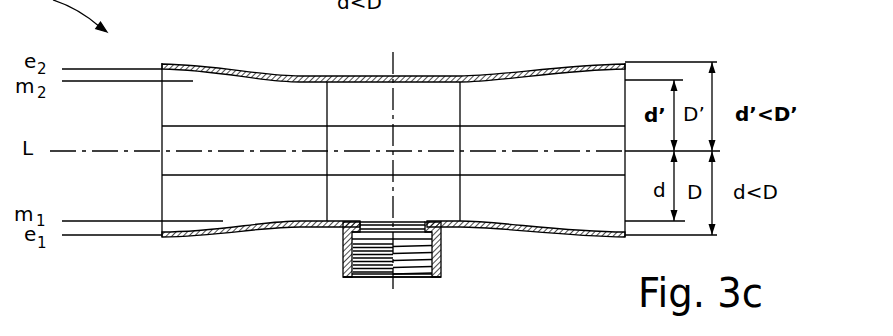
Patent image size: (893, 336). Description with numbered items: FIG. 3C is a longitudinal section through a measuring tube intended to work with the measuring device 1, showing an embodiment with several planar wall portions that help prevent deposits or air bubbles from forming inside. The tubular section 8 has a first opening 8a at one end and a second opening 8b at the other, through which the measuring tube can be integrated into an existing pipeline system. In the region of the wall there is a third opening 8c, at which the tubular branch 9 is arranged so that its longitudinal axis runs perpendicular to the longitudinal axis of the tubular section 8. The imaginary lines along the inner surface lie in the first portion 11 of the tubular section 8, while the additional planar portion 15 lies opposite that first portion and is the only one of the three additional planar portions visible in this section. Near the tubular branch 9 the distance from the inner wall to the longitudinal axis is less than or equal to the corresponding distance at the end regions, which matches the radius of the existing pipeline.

The measuring device 1 is at (366, 283).
The tubular section 8 is at (238, 52).
The first opening 8a is at (164, 135).
The second opening 8b is at (624, 135).
The third opening 8c is at (407, 212).
The tubular branch 9 is at (452, 264).
The first portion 11 is at (393, 186).
The additional planar portion 15 is at (393, 116).